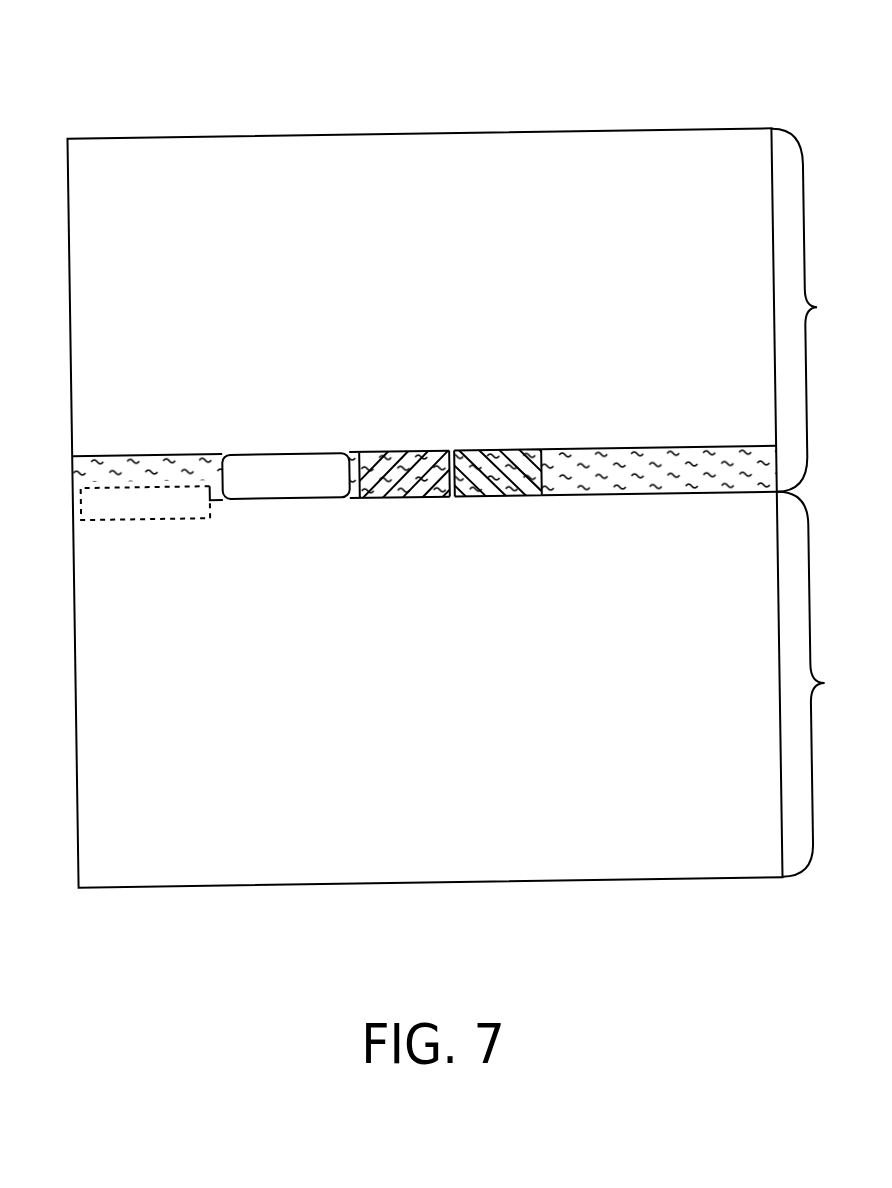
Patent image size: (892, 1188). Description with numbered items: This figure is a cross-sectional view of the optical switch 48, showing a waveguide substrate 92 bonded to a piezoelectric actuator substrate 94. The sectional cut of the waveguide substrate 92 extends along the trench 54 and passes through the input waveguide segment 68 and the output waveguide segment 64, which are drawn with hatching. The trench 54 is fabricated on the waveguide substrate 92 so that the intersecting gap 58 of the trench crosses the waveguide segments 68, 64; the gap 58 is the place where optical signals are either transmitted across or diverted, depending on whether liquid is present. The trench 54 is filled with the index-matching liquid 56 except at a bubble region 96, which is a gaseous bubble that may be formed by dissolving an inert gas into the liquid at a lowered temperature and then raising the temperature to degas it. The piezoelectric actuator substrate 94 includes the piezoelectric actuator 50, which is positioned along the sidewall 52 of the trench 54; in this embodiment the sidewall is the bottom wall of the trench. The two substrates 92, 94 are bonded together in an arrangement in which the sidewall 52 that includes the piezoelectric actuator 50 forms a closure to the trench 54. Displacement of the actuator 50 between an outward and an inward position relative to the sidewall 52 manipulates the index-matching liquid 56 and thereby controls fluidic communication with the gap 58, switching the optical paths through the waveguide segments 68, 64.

The optical switch 48 is at (648, 58).
The piezoelectric actuator 50 is at (109, 510).
The sidewall 52 is at (213, 499).
The trench 54 is at (90, 451).
The index-matching liquid 56 is at (665, 454).
The intersecting gap 58 is at (453, 438).
The first output waveguide segment 64 is at (508, 451).
The second input waveguide segment 68 is at (395, 452).
The waveguide substrate 92 is at (813, 310).
The piezoelectric actuator substrate 94 is at (819, 684).
The bubble region 96 is at (287, 461).